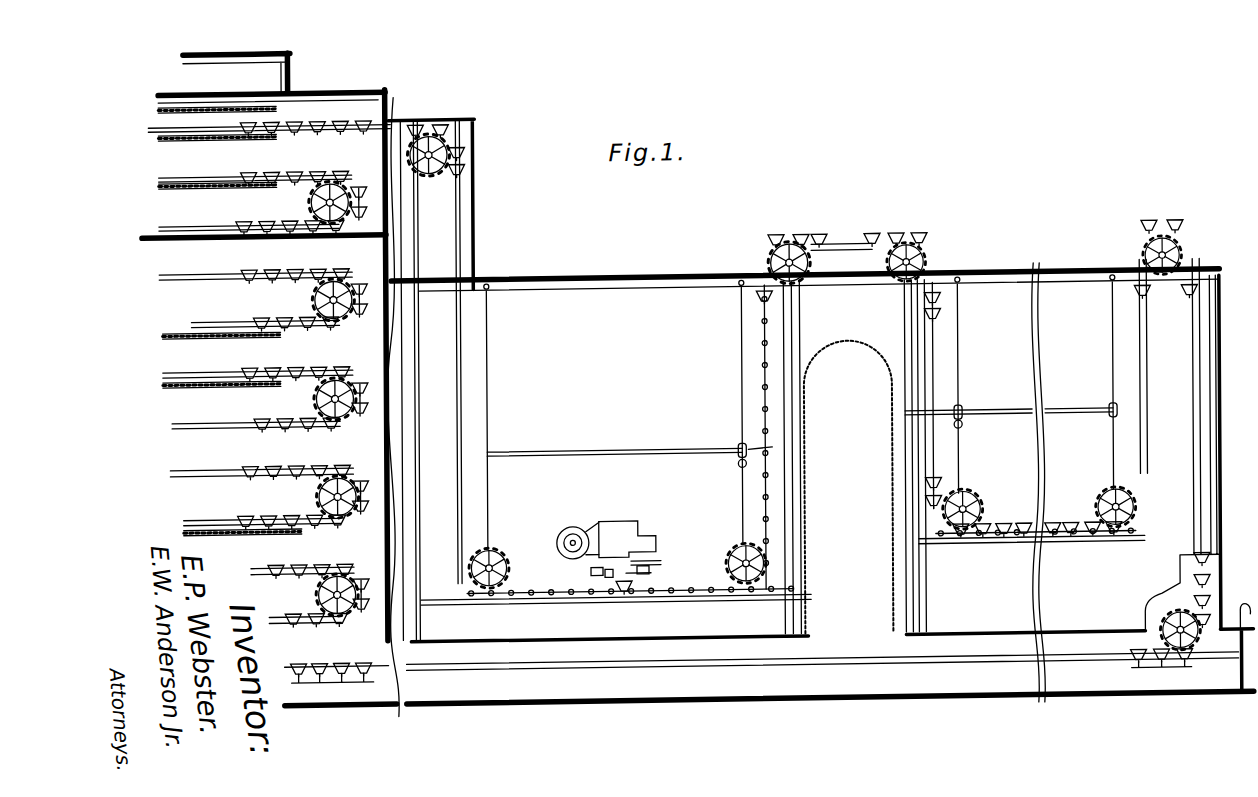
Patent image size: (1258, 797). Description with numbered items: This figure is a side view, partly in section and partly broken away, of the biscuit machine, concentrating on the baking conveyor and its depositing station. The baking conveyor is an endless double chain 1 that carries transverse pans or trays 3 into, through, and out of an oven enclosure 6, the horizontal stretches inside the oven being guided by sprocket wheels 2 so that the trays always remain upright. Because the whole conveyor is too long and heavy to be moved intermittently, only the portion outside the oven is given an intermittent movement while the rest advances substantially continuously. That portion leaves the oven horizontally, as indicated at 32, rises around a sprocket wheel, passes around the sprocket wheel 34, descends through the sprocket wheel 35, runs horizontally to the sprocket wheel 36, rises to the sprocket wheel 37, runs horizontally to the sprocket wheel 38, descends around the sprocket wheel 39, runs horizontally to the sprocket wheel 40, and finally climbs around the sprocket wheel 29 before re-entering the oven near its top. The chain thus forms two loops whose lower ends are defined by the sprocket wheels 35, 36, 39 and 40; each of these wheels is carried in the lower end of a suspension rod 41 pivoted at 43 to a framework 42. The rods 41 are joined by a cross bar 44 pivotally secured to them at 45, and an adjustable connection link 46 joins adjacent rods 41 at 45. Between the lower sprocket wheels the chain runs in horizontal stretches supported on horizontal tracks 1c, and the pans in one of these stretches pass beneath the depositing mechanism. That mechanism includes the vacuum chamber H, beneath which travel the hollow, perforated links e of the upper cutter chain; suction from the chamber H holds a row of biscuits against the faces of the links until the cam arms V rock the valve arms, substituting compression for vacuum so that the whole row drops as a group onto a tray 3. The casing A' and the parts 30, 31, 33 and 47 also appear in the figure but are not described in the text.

The conveyor chain 1 is at (241, 127).
The horizontal tracks 1c is at (476, 597).
The sprocket wheels 2 is at (326, 308).
The transverse pans or trays 3 is at (316, 167).
The oven enclosure 6 is at (382, 245).
The sprocket wheel 29 is at (427, 174).
The casing top 30 is at (393, 114).
The lower conveyor 31 is at (386, 692).
The horizontal conveyor portion outside oven 32 is at (848, 662).
The sprocket wheel 33 is at (1158, 624).
The sprocket wheel 34 is at (1174, 285).
The sprocket wheel 35 is at (1105, 495).
The sprocket wheel 36 is at (978, 500).
The sprocket wheel 37 is at (892, 275).
The sprocket wheel 38 is at (802, 278).
The sprocket wheel 39 is at (728, 548).
The sprocket wheel 40 is at (500, 552).
The suspension rods 41 is at (488, 354).
The framework 42 is at (690, 273).
The pivot 43 is at (490, 287).
The cross bar 44 is at (597, 448).
The pivotal connection 45 is at (736, 448).
The adjustable connection link 46 is at (762, 452).
The crank 47 is at (744, 467).
The casing A' is at (317, 392).
The vacuum chamber H is at (622, 528).
The cam arm V is at (562, 532).
The links of upper cutter chain e is at (634, 582).